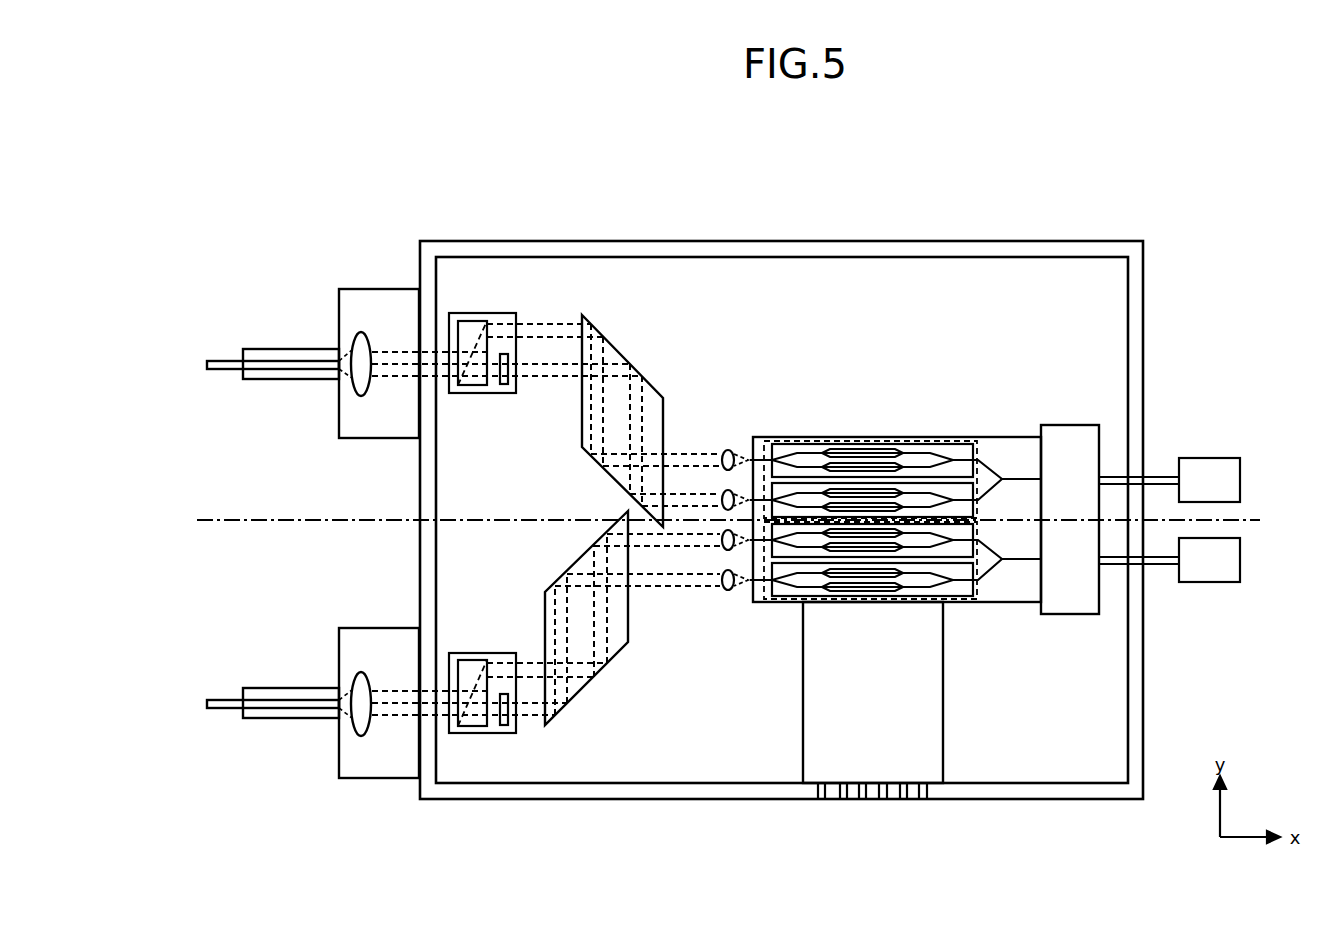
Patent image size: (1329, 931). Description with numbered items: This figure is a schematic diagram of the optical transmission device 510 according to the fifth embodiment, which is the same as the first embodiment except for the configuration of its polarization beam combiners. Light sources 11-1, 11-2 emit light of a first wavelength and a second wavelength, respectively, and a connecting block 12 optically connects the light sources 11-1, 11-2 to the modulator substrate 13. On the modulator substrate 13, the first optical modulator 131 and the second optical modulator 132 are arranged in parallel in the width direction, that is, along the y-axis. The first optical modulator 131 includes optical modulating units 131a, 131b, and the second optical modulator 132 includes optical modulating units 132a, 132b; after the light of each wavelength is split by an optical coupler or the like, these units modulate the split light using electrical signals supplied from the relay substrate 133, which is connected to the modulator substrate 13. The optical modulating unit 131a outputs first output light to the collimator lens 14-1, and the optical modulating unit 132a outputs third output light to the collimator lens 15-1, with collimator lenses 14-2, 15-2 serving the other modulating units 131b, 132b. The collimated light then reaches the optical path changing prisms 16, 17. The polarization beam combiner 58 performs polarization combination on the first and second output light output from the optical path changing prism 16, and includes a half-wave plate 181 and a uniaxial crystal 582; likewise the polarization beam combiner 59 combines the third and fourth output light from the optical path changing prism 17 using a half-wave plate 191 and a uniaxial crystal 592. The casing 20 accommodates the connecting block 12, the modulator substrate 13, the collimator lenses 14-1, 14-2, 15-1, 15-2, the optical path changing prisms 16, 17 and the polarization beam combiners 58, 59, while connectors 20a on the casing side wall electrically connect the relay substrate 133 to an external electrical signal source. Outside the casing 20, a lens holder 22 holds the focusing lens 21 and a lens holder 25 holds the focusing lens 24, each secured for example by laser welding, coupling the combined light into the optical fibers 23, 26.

The optical transmission device 510 is at (805, 178).
The casing 20 is at (965, 240).
The connectors 20a is at (903, 800).
The lens holder 22 is at (380, 289).
The optical fiber 23 is at (247, 349).
The focusing lens 21 is at (349, 343).
The polarization beam combiner 58 is at (500, 313).
The uniaxial crystal 582 is at (472, 393).
The half-wave plate 181 is at (504, 393).
The optical path changing prism 16 is at (616, 351).
The lens holder 25 is at (378, 778).
The optical fiber 26 is at (250, 718).
The focusing lens 24 is at (349, 727).
The polarization beam combiner 59 is at (500, 653).
The uniaxial crystal 592 is at (472, 733).
The half-wave plate 191 is at (504, 733).
The optical path changing prism 17 is at (574, 561).
The collimator lens 14-1 is at (723, 453).
The collimator lens 14-2 is at (723, 493).
The collimator lens 15-1 is at (723, 547).
The collimator lens 15-2 is at (723, 588).
The modulator substrate 13 is at (963, 437).
The first optical modulator 131 is at (873, 441).
The second optical modulator 132 is at (957, 602).
The optical modulating unit 131a is at (975, 458).
The optical modulating unit 131b is at (975, 508).
The optical modulating unit 132a is at (975, 535).
The optical modulating unit 132b is at (975, 590).
The relay substrate 133 is at (943, 697).
The connecting block 12 is at (1075, 425).
The light source 11-1 is at (1241, 481).
The light source 11-2 is at (1241, 561).